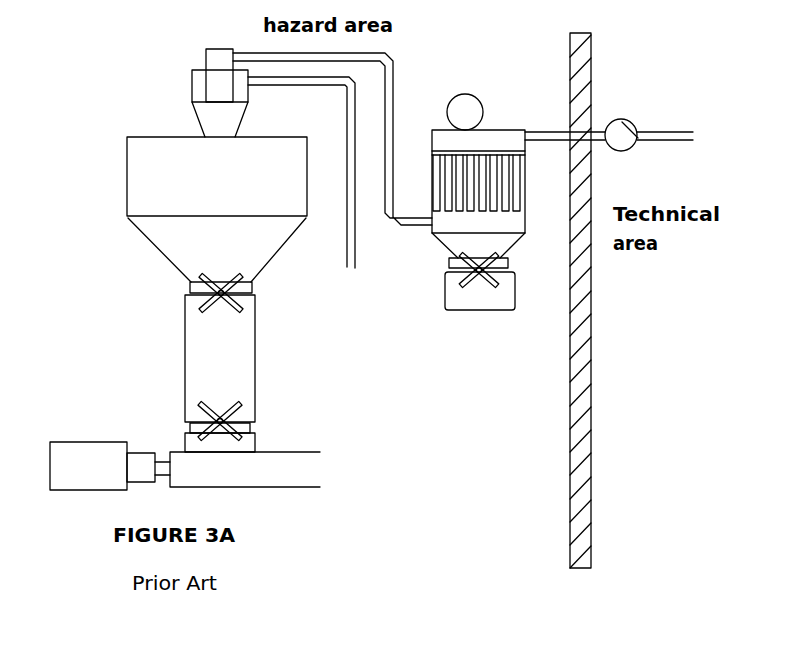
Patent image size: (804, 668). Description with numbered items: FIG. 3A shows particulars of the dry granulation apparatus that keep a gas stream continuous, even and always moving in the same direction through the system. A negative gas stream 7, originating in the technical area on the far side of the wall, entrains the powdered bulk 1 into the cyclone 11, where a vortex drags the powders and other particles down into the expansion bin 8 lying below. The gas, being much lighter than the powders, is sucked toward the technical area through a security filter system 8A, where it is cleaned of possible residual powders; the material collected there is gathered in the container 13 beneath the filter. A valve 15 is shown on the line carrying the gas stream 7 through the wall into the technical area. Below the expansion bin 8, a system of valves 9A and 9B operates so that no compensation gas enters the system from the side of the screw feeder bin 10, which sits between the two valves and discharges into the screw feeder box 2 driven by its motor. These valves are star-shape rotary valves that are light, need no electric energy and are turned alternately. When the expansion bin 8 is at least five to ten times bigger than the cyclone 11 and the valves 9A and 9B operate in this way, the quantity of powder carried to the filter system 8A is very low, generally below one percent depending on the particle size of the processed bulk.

The powdered bulk 1 is at (352, 272).
The screw feeder box 2 is at (219, 480).
The negative gas stream 7 is at (671, 138).
The expansion bin 8 is at (239, 198).
The security filter system 8A is at (478, 176).
The valve 9A is at (240, 292).
The valve 9B is at (243, 420).
The screw feeder bin 10 is at (220, 376).
The cyclone 11 is at (220, 93).
The container 13 is at (480, 281).
The valve 15 is at (625, 121).